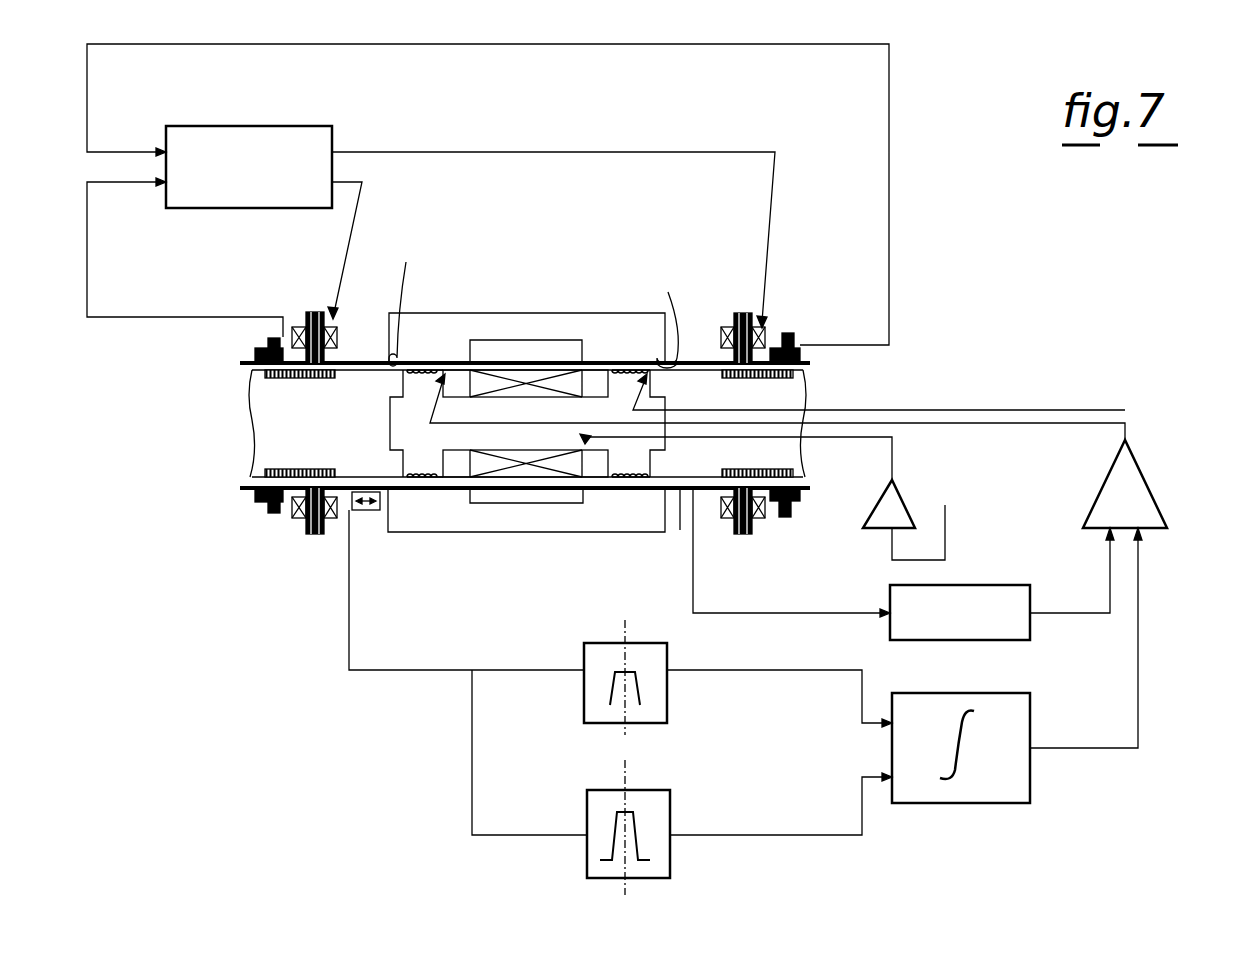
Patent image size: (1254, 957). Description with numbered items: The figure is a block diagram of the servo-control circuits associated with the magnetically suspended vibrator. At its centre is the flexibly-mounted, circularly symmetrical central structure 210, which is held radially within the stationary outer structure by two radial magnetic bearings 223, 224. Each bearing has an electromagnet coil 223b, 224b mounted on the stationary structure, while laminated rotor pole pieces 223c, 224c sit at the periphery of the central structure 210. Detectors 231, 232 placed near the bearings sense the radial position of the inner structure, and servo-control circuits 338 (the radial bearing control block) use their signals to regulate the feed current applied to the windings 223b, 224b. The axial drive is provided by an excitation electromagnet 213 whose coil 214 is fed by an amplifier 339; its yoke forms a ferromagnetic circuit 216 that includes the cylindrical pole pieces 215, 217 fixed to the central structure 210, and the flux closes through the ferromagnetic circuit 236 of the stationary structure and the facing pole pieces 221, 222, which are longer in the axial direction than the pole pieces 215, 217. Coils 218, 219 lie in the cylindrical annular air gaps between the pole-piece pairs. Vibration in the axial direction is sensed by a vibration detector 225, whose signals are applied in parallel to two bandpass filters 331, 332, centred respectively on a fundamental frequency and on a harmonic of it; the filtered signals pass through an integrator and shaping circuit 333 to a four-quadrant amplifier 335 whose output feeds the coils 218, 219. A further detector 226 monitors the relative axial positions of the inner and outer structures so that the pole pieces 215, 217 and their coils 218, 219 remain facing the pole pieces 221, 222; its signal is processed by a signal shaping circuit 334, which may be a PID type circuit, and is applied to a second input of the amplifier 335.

The central flexibly-mounted structure 210 is at (250, 440).
The electromagnet 213 is at (515, 360).
The coil 214 is at (516, 490).
The cylindrical pole piece 215 is at (413, 385).
The ferromagnetic circuit 216 is at (403, 437).
The cylindrical pole piece 217 is at (633, 458).
The coil 218 is at (432, 488).
The coil 219 is at (617, 488).
The pole piece 221 is at (405, 299).
The pole piece 222 is at (649, 314).
The radial magnetic bearing 223 is at (348, 337).
The electromagnet coil 223b is at (297, 325).
The laminated rotor pole piece 223c is at (268, 373).
The radial magnetic bearing 224 is at (710, 333).
The electromagnet coil 224b is at (766, 327).
The laminated rotor pole piece 224c is at (767, 378).
The vibration detector 225 is at (377, 513).
The detector 226 is at (682, 530).
The detector 231 is at (262, 341).
The detector 232 is at (792, 333).
The ferromagnetic circuit 236 is at (545, 325).
The bandpass filter 331 is at (660, 698).
The bandpass filter 332 is at (670, 807).
The integrator and shaping circuit 333 is at (1015, 803).
The signal shaping circuit 334 is at (1012, 640).
The amplifier 335 is at (1150, 492).
The servo-control circuits 338 is at (268, 126).
The amplifier 339 is at (898, 505).